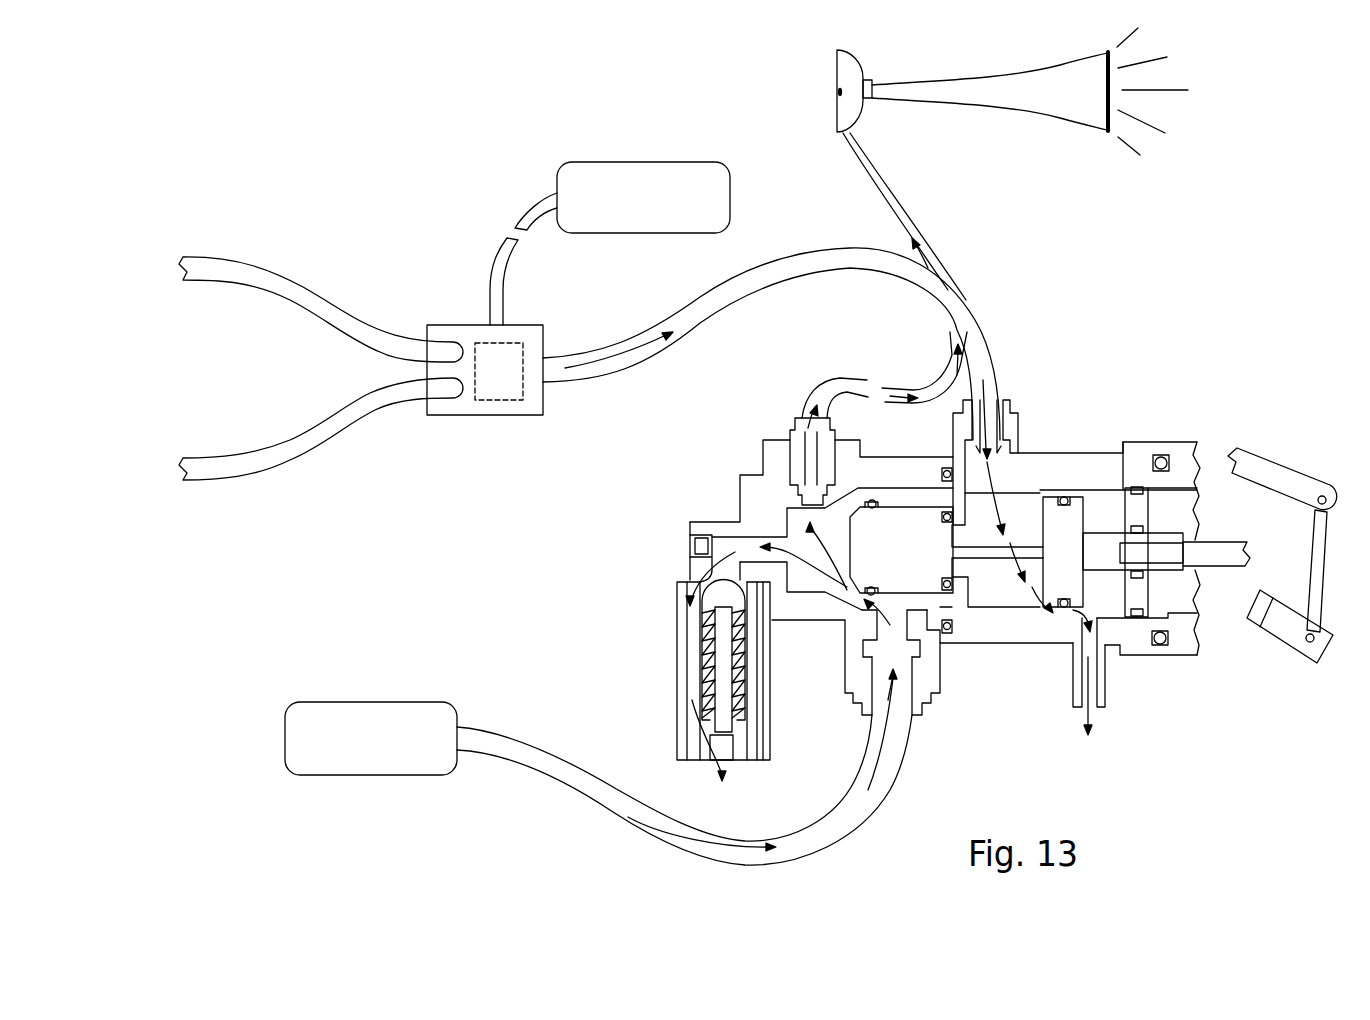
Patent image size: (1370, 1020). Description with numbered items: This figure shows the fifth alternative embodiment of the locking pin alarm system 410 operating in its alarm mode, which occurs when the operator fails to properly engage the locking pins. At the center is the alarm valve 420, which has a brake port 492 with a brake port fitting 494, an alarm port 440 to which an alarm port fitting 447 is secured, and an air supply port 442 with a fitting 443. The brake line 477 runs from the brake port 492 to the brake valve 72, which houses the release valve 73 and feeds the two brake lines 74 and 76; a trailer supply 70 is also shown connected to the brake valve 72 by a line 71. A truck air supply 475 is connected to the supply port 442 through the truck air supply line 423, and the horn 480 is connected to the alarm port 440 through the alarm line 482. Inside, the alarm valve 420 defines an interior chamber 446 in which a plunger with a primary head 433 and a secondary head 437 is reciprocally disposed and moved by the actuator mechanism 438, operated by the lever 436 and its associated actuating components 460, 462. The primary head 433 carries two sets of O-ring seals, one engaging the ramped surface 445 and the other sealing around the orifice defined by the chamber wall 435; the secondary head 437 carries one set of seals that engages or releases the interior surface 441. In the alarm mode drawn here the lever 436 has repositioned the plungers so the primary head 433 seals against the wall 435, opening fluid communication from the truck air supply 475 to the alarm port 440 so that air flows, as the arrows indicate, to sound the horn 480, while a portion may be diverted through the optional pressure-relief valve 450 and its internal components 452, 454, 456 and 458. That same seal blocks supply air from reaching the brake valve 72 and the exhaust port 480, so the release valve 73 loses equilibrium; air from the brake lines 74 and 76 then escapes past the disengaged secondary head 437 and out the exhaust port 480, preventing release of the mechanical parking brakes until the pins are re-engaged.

The trailer supply 70 is at (623, 233).
The trailer supply line 71 is at (503, 292).
The brake valve 72 is at (485, 413).
The release valve 73 is at (520, 398).
The brake line 74 is at (228, 268).
The brake line 76 is at (257, 457).
The alarm system 410 is at (1135, 308).
The alarm valve 420 is at (1157, 648).
The truck air supply line 423 is at (898, 777).
The primary plunger head 433 is at (900, 540).
The chamber wall 435 is at (962, 515).
The lever 436 is at (1298, 648).
The secondary plunger head 437 is at (1090, 553).
The actuator mechanism 438 is at (970, 557).
The alarm port 440 is at (762, 455).
The interior surface 441 is at (1040, 493).
The air supply port 442 is at (940, 665).
The fitting 443 is at (928, 707).
The ramped surface 445 is at (847, 500).
The interior chamber 446 is at (783, 538).
The alarm port fitting 447 is at (828, 418).
The pressure-relief valve 450 is at (680, 602).
The regulator plunger 452 is at (723, 627).
The spring 454 is at (707, 658).
The plug 456 is at (727, 547).
The vent 458 is at (702, 747).
The lever 460 is at (1287, 477).
The link 462 is at (1313, 555).
The truck air supply 475 is at (350, 775).
The brake line 477 is at (787, 263).
The horn 480 is at (863, 70).
The alarm line 482 is at (905, 232).
The brake port 492 is at (1020, 415).
The brake port fitting 494 is at (1010, 403).